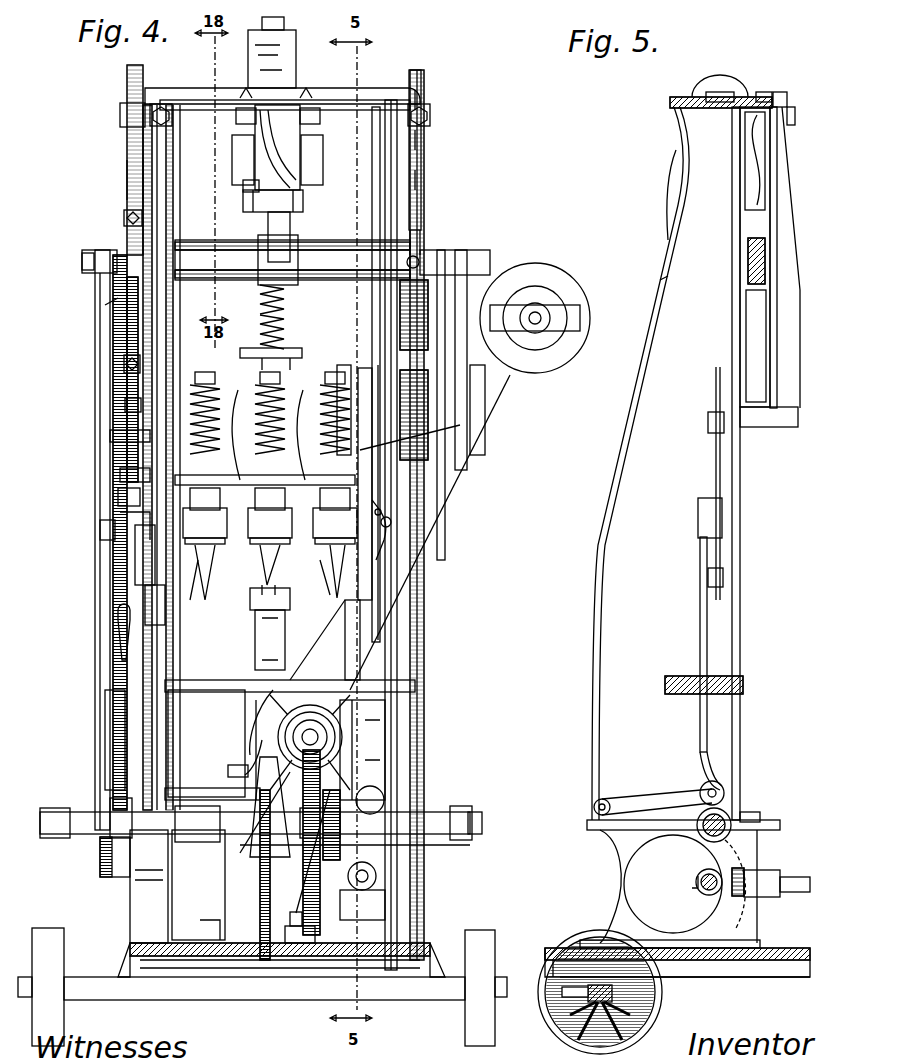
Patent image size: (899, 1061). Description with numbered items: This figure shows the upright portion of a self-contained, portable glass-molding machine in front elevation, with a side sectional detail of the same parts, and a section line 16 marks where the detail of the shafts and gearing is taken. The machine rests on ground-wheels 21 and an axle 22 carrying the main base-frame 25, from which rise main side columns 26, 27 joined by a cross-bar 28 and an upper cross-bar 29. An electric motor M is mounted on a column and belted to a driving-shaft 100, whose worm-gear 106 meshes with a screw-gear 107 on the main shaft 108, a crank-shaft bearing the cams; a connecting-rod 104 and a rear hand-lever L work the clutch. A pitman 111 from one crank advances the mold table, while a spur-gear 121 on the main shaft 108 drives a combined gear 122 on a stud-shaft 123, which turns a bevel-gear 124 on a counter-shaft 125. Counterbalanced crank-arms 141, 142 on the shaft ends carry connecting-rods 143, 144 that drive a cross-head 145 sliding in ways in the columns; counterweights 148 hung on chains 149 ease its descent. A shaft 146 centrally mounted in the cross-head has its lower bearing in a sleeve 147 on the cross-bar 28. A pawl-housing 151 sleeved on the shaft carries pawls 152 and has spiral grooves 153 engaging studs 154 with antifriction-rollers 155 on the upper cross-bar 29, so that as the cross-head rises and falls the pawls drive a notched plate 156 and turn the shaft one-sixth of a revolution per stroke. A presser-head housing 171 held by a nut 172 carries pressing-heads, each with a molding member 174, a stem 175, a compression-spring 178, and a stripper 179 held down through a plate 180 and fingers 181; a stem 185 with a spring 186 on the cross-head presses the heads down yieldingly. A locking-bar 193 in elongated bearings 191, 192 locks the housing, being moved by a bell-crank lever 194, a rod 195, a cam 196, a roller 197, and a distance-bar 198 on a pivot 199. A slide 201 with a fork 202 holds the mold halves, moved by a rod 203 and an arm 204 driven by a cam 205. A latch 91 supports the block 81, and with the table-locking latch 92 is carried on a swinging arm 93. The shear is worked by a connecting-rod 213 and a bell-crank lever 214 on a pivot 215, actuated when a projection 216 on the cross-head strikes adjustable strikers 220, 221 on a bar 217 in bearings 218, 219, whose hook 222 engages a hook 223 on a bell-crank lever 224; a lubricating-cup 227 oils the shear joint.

In FIG. 4, the section line 16 is at (456, 835).
In FIG. 4, the ground-wheels 21 is at (64, 1028).
In FIG. 5, the ground-wheels 21 is at (662, 1012).
In FIG. 4, the axle 22 is at (200, 1000).
In FIG. 5, the axle 22 is at (665, 1013).
In FIG. 4, the main base-frame 25 is at (410, 962).
In FIG. 5, the main base-frame 25 is at (768, 977).
In FIG. 4, the main side column 26 is at (140, 718).
In FIG. 4, the main side column 27 is at (400, 600).
In FIG. 5, the main side column 27 is at (660, 286).
In FIG. 4, the cross-bar 28 is at (190, 680).
In FIG. 5, the cross-bar 28 is at (665, 688).
In FIG. 4, the upper cross-bar 29 is at (192, 88).
In FIG. 5, the upper cross-bar 29 is at (688, 96).
In FIG. 4, the block 81 is at (242, 858).
In FIG. 4, the movable latch 91 is at (262, 878).
In FIG. 4, the table-locking latch 92 is at (248, 745).
In FIG. 4, the swinging arm 93 is at (250, 700).
In FIG. 4, the driving-shaft 100 is at (318, 735).
In FIG. 4, the connecting-rod 104 is at (303, 951).
In FIG. 4, the worm-gear 106 is at (330, 715).
In FIG. 4, the screw-gear 107 is at (301, 862).
In FIG. 4, the main shaft 108 is at (212, 785).
In FIG. 5, the main shaft 108 is at (750, 814).
In FIG. 4, the pitman 111 is at (198, 885).
In FIG. 4, the spur-gear 121 is at (405, 812).
In FIG. 4, the combined spur and bevel gear 122 is at (390, 910).
In FIG. 5, the stud-shaft 123 is at (703, 890).
In FIG. 4, the bevel-gear 124 is at (395, 868).
In FIG. 5, the bevel-gear 124 is at (752, 871).
In FIG. 4, the counter-shaft 125 is at (376, 883).
In FIG. 5, the counter-shaft 125 is at (800, 877).
In FIG. 4, the crank-arm 141 is at (107, 868).
In FIG. 4, the crank-arm 142 is at (450, 820).
In FIG. 4, the connecting-rod 143 is at (95, 665).
In FIG. 4, the connecting-rod 144 is at (424, 620).
In FIG. 4, the cross-head 145 is at (292, 260).
In FIG. 5, the cross-head 145 is at (746, 268).
In FIG. 4, the shaft 146 is at (258, 558).
In FIG. 4, the sleeve 147 is at (258, 600).
In FIG. 4, the counterweights 148 is at (127, 333).
In FIG. 4, the chains 149 is at (432, 190).
In FIG. 5, the chains 149 is at (644, 195).
In FIG. 4, the pawl-housing 151 is at (290, 40).
In FIG. 4, the pawls 152 is at (232, 148).
In FIG. 4, the spiral grooves 153 is at (258, 185).
In FIG. 4, the studs 154 is at (236, 116).
In FIG. 4, the antifriction-rollers 155 is at (244, 96).
In FIG. 4, the notched plate 156 is at (305, 202).
In FIG. 4, the presser-head housing 171 is at (240, 412).
In FIG. 4, the nut 172 is at (258, 362).
In FIG. 4, the molding member 174 is at (328, 584).
In FIG. 4, the stem 175 is at (205, 380).
In FIG. 4, the compression-spring 178 is at (343, 385).
In FIG. 4, the stripper 179 is at (270, 516).
In FIG. 4, the plate 180 is at (175, 478).
In FIG. 4, the pins or fingers 181 is at (385, 470).
In FIG. 4, the stem 185 is at (286, 328).
In FIG. 4, the compression-spring 186 is at (286, 303).
In FIG. 4, the bearing 191 is at (379, 484).
In FIG. 5, the bearing 191 is at (708, 426).
In FIG. 4, the bearing 192 is at (319, 640).
In FIG. 5, the bearing 192 is at (723, 578).
In FIG. 4, the locking-bar 193 is at (358, 368).
In FIG. 5, the locking-bar 193 is at (716, 460).
In FIG. 4, the bell-crank lever 194 is at (392, 522).
In FIG. 5, the bell-crank lever 194 is at (698, 524).
In FIG. 4, the rod 195 is at (345, 647).
In FIG. 5, the rod 195 is at (700, 652).
In FIG. 4, the cam 196 is at (373, 825).
In FIG. 5, the cam 196 is at (731, 828).
In FIG. 4, the antifriction-roller 197 is at (369, 750).
In FIG. 5, the antifriction-roller 197 is at (704, 786).
In FIG. 5, the distance-bar 198 is at (648, 797).
In FIG. 5, the pivot 199 is at (596, 802).
In FIG. 4, the slide 201 is at (255, 640).
In FIG. 4, the fork 202 is at (252, 614).
In FIG. 4, the rod 203 is at (255, 718).
In FIG. 4, the arm 204 is at (232, 767).
In FIG. 4, the cam 205 is at (149, 886).
In FIG. 4, the connecting-rod 213 is at (145, 588).
In FIG. 4, the bell-crank lever 214 is at (135, 545).
In FIG. 4, the pivot 215 is at (118, 497).
In FIG. 4, the projection 216 is at (105, 305).
In FIG. 4, the bar 217 is at (127, 178).
In FIG. 4, the bearing 218 is at (120, 114).
In FIG. 4, the bearing 219 is at (125, 406).
In FIG. 4, the adjustable striker 220 is at (124, 215).
In FIG. 4, the adjustable striker 221 is at (124, 362).
In FIG. 4, the hook 222 is at (120, 476).
In FIG. 4, the hook 223 is at (128, 516).
In FIG. 4, the bell-crank lever 224 is at (100, 530).
In FIG. 4, the lubricating-cup 227 is at (110, 436).
In FIG. 4, the hand-lever L is at (118, 620).
In FIG. 4, the electric motor M is at (540, 262).